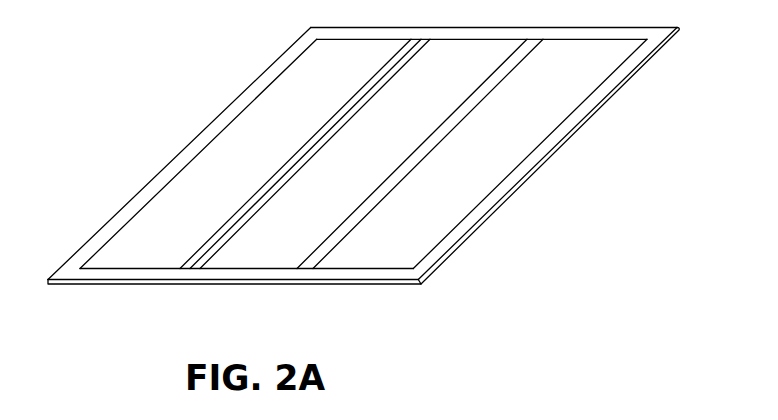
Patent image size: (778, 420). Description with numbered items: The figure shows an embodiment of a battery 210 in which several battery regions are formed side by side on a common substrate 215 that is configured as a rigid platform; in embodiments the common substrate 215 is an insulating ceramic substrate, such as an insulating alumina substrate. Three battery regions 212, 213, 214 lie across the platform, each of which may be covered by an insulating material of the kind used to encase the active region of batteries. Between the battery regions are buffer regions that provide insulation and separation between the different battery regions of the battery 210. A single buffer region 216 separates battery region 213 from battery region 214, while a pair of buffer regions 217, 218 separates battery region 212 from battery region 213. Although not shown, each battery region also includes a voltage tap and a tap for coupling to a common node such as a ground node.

The battery 210 is at (187, 83).
The battery region 212 is at (180, 190).
The battery region 213 is at (255, 263).
The battery region 214 is at (523, 147).
The common substrate 215 is at (102, 273).
The buffer region 216 is at (487, 89).
The buffer region 217 is at (397, 75).
The buffer region 218 is at (363, 93).